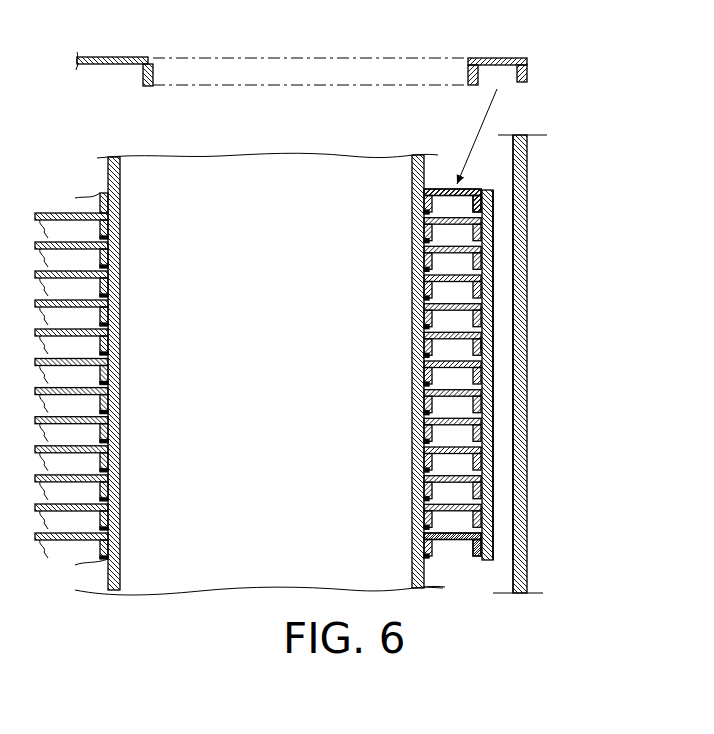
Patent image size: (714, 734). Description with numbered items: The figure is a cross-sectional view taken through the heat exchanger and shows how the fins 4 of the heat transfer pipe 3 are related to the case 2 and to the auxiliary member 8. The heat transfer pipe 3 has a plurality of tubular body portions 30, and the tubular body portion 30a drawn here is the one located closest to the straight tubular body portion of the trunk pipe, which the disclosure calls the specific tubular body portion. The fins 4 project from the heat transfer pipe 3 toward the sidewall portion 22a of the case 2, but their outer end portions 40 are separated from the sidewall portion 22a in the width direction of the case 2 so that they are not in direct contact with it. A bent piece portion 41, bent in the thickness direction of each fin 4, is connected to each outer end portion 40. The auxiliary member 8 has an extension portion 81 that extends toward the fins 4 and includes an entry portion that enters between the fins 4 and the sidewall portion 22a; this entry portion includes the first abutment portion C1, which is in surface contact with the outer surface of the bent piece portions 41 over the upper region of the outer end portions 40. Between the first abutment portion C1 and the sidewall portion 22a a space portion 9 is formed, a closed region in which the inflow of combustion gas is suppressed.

The case 2 is at (543, 364).
The sidewall portion 22a is at (522, 286).
The heat transfer pipe 3 is at (175, 182).
The tubular body portions 30 is at (82, 340).
The tubular body portion 30a is at (108, 176).
The fins 4 is at (334, 322).
The outer end portions 40 is at (530, 62).
The bent piece portion 41 is at (521, 83).
The auxiliary member 8 is at (534, 375).
The extension portion 81 is at (487, 375).
The space portion 9 is at (505, 325).
The first abutment portion C1 is at (480, 343).